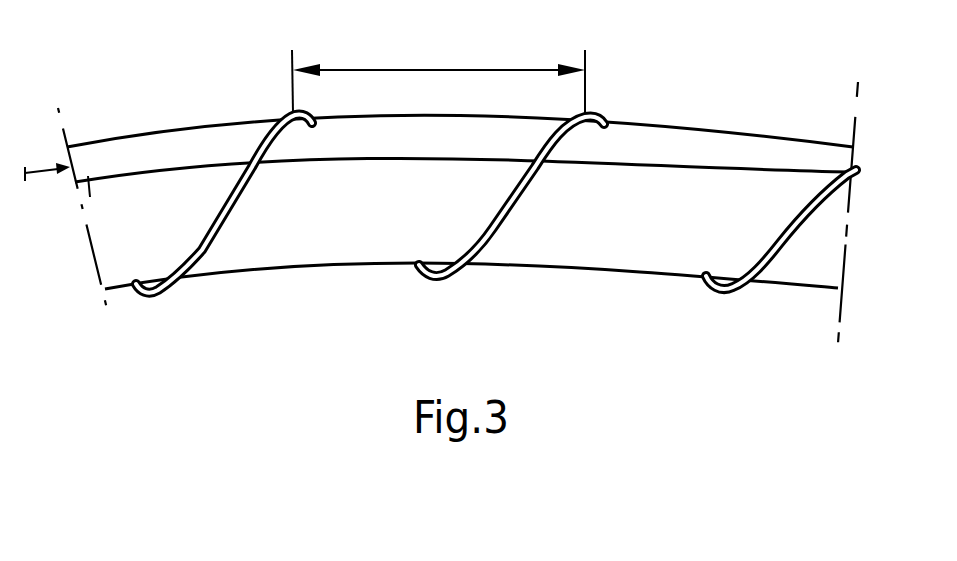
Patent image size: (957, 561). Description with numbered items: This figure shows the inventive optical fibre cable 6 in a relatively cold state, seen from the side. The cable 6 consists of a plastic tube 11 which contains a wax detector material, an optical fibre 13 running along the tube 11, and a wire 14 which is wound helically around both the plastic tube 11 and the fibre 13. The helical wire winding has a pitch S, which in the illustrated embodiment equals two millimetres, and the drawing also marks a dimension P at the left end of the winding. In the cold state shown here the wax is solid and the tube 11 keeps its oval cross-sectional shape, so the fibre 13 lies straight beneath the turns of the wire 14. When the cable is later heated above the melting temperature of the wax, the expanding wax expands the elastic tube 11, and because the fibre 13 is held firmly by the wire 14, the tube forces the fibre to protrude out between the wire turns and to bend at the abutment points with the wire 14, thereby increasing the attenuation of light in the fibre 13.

The optical fibre cable 6 is at (461, 205).
The plastic tube 11 is at (625, 273).
The optical fibre 13 is at (748, 152).
The wire 14 is at (497, 250).
The pitch S is at (448, 68).
The offset P is at (57, 190).